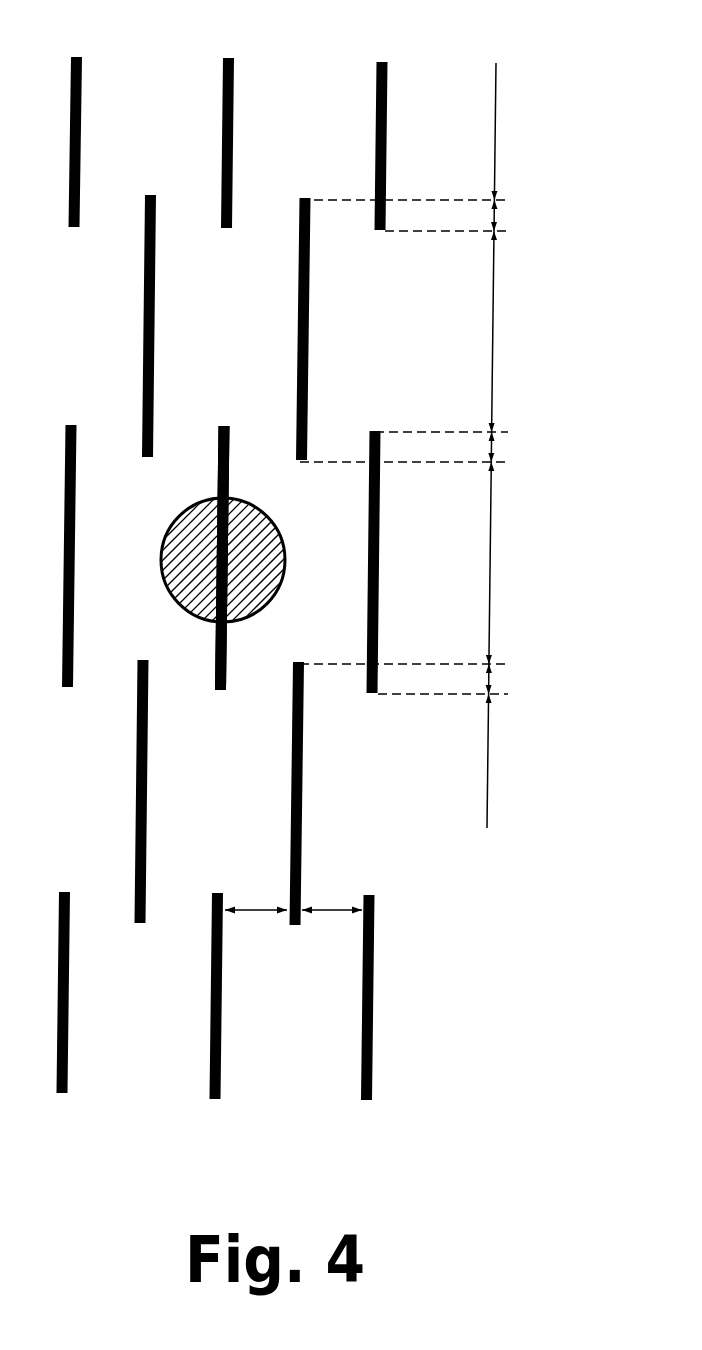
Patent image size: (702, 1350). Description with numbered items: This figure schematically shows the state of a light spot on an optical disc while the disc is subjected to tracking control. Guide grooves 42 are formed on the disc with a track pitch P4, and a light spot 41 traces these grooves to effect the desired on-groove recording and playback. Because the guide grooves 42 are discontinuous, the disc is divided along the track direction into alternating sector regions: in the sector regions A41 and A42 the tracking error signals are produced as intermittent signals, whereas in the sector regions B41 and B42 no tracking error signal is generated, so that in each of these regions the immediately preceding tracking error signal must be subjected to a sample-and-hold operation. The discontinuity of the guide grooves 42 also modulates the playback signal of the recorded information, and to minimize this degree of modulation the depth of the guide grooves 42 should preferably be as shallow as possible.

The light spot 41 is at (183, 548).
The guide grooves 42 is at (81, 143).
The sector region B41 is at (444, 452).
The sector region A41 is at (540, 331).
The sector region B42 is at (444, 452).
The sector region A42 is at (538, 563).
The track pitch P4 is at (293, 943).